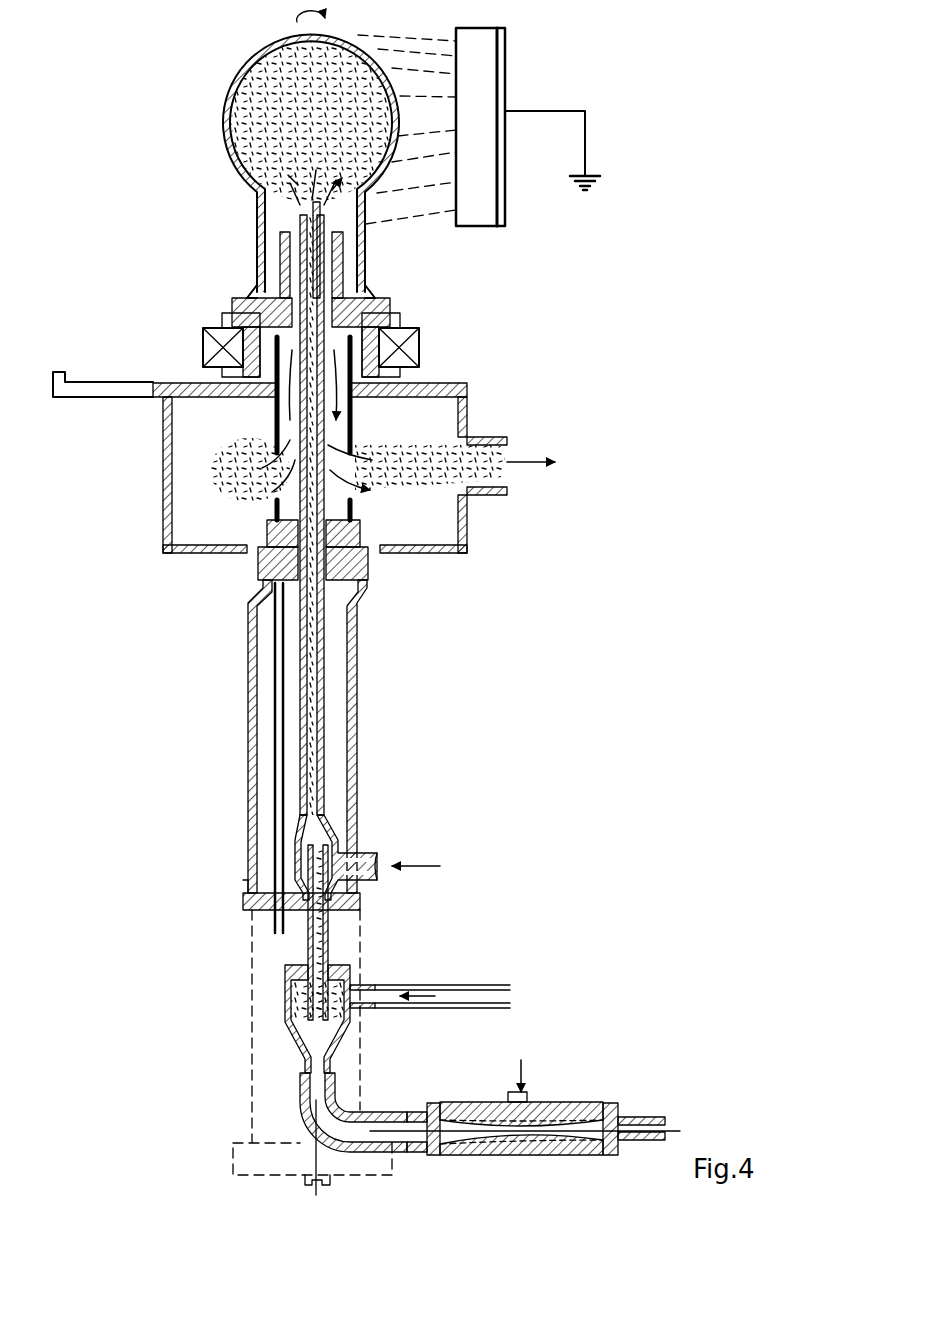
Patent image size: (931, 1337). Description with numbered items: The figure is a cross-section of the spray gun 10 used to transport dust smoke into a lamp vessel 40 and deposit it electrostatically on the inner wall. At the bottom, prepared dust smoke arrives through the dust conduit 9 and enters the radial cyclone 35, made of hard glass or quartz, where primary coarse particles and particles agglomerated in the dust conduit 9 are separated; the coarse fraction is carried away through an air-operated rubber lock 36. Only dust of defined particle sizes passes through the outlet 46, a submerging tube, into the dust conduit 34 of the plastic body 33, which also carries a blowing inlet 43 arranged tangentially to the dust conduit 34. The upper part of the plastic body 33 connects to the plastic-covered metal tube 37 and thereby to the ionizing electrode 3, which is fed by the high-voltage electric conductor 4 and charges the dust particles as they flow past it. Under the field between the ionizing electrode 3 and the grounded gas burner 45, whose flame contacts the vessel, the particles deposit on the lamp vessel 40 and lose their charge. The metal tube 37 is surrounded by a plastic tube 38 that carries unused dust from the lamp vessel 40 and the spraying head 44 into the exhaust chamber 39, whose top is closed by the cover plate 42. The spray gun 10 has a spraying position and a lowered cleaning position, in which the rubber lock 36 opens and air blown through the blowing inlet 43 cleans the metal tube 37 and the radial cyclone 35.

The ionizing electrode 3 is at (318, 210).
The high-voltage electric conductor 4 is at (283, 852).
The dust conduit 9 is at (497, 990).
The spray gun 10 is at (357, 722).
The plastic body 33 is at (357, 640).
The dust conduit 34 is at (328, 930).
The radial cyclone 35 is at (372, 985).
The rubber lock 36 is at (567, 1103).
The metal tube 37 is at (325, 404).
The plastic tube 38 is at (352, 430).
The exhaust chamber 39 is at (430, 528).
The lamp vessel 40 is at (255, 128).
The cover plate 42 is at (117, 392).
The blowing inlet 43 is at (378, 855).
The spraying head 44 is at (245, 310).
The gas burner 45 is at (478, 72).
The outlet 46 is at (300, 990).